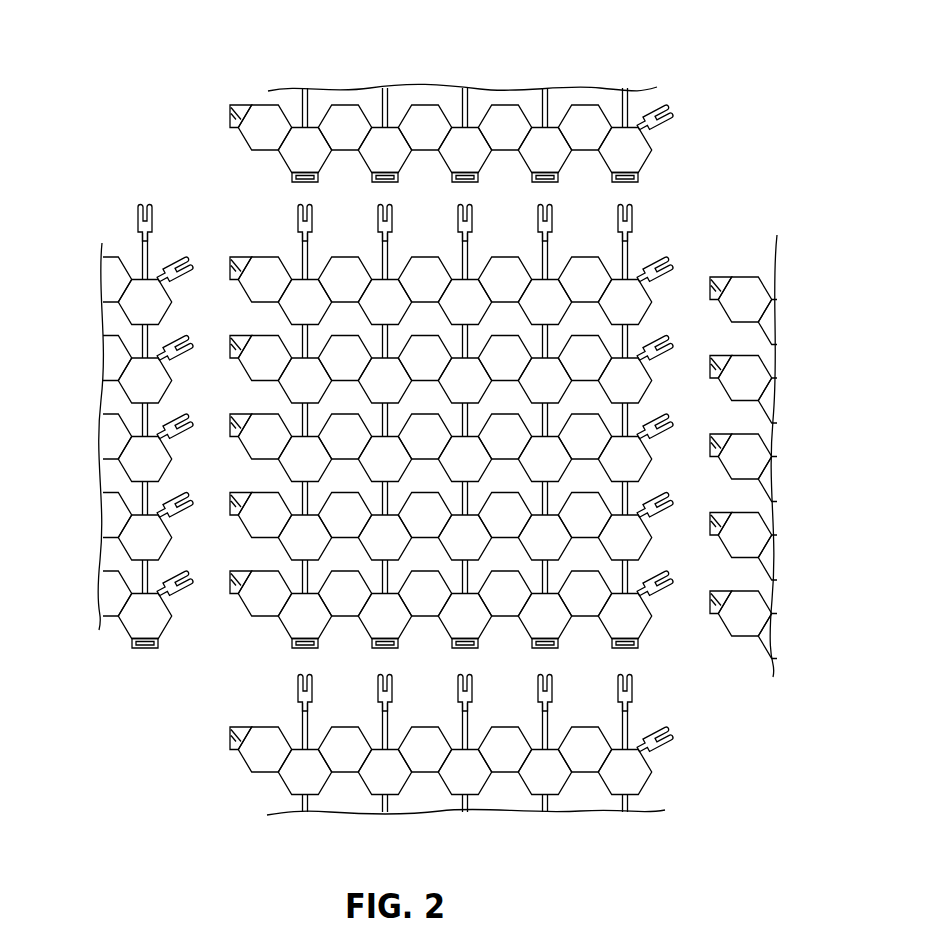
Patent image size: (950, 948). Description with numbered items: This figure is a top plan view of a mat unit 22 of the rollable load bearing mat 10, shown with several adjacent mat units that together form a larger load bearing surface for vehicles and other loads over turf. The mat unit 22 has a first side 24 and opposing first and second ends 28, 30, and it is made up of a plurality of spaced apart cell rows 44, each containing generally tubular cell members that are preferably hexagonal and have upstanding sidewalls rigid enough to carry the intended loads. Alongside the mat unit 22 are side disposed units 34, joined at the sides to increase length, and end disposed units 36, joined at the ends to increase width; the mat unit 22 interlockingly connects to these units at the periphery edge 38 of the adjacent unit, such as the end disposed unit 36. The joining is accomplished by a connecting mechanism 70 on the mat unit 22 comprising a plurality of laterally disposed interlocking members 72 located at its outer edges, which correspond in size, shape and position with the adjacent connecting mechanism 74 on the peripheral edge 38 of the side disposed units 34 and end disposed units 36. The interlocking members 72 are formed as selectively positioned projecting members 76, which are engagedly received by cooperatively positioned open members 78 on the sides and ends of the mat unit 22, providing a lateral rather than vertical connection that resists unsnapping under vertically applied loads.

The load bearing mat 10 is at (773, 113).
The mat unit 22 is at (652, 252).
The first side 24 is at (350, 223).
The first end 28 is at (230, 612).
The second end 30 is at (667, 605).
The side disposed unit 34 is at (213, 112).
The end disposed unit 36 is at (775, 282).
The periphery edge 38 is at (158, 344).
The cell row 44 is at (240, 383).
The connecting mechanism 70 is at (658, 682).
The interlocking member 72 is at (650, 191).
The adjacent connecting mechanism 74 is at (717, 354).
The projecting member 76 is at (300, 222).
The open member 78 is at (295, 645).